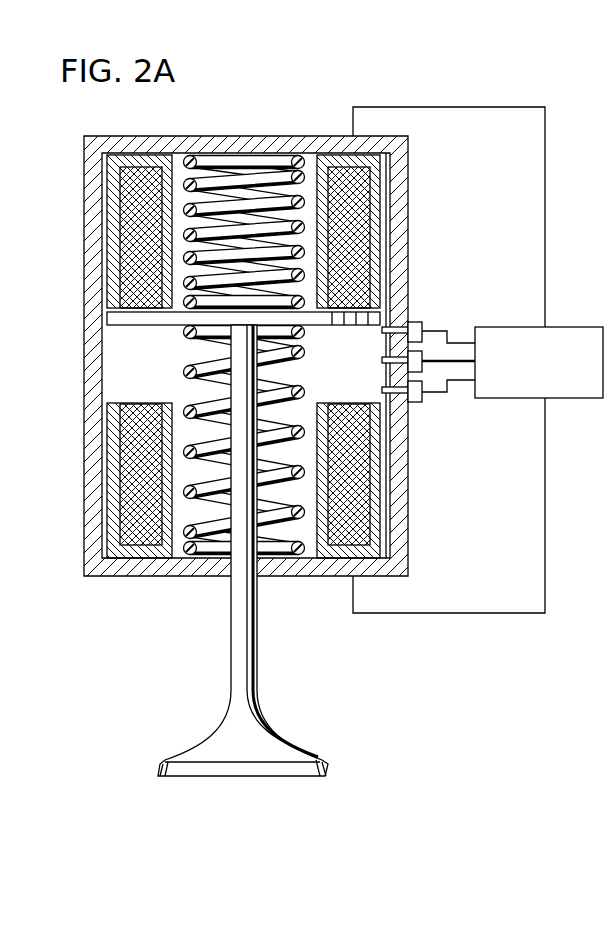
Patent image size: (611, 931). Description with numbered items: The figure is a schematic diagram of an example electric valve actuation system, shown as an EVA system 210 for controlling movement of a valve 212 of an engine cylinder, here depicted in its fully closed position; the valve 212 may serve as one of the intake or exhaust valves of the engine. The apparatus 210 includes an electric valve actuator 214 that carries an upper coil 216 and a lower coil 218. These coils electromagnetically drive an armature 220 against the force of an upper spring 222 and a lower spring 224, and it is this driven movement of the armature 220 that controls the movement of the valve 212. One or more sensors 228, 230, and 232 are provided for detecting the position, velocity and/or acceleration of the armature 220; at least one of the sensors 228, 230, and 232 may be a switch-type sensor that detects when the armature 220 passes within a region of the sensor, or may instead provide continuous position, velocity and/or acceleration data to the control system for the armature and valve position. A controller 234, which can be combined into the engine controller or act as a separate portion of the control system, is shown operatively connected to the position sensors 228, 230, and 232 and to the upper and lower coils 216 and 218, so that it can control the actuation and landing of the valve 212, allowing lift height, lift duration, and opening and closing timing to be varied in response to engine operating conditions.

The EVA system 210 is at (396, 97).
The valve 212 is at (288, 746).
The electric valve actuator 214 is at (85, 367).
The upper coil 216 is at (130, 235).
The lower coil 218 is at (130, 478).
The armature 220 is at (130, 320).
The upper spring 222 is at (247, 160).
The lower spring 224 is at (273, 517).
The sensor 228 is at (430, 352).
The sensor 230 is at (415, 404).
The sensor 232 is at (415, 320).
The controller 234 is at (590, 398).